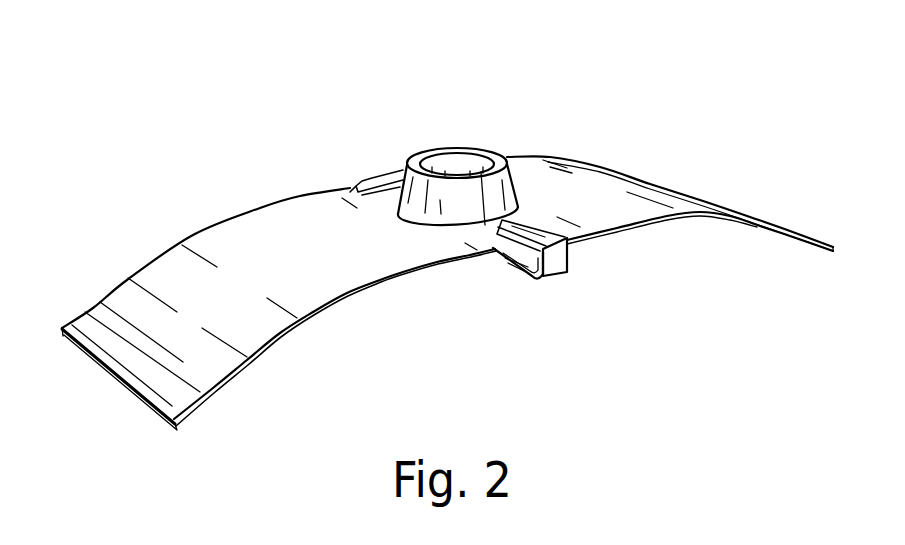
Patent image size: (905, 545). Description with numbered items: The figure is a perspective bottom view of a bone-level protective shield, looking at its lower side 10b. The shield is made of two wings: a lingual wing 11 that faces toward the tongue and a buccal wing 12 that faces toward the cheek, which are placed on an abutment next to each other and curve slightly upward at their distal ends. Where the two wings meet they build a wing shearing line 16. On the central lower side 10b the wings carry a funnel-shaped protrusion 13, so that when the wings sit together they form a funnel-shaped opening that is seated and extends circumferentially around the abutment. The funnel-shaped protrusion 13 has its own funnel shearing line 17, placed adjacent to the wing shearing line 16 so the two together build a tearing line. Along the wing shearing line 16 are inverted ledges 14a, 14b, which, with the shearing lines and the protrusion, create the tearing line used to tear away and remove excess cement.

The lower side 10b is at (295, 235).
The lingual wing 11 is at (585, 182).
The buccal wing 12 is at (125, 307).
The funnel-shaped protrusion 13 is at (513, 177).
The inverted ledge 14a is at (567, 255).
The inverted ledge 14b is at (527, 260).
The wing shearing line 16 is at (520, 240).
The funnel shearing line 17 is at (470, 193).